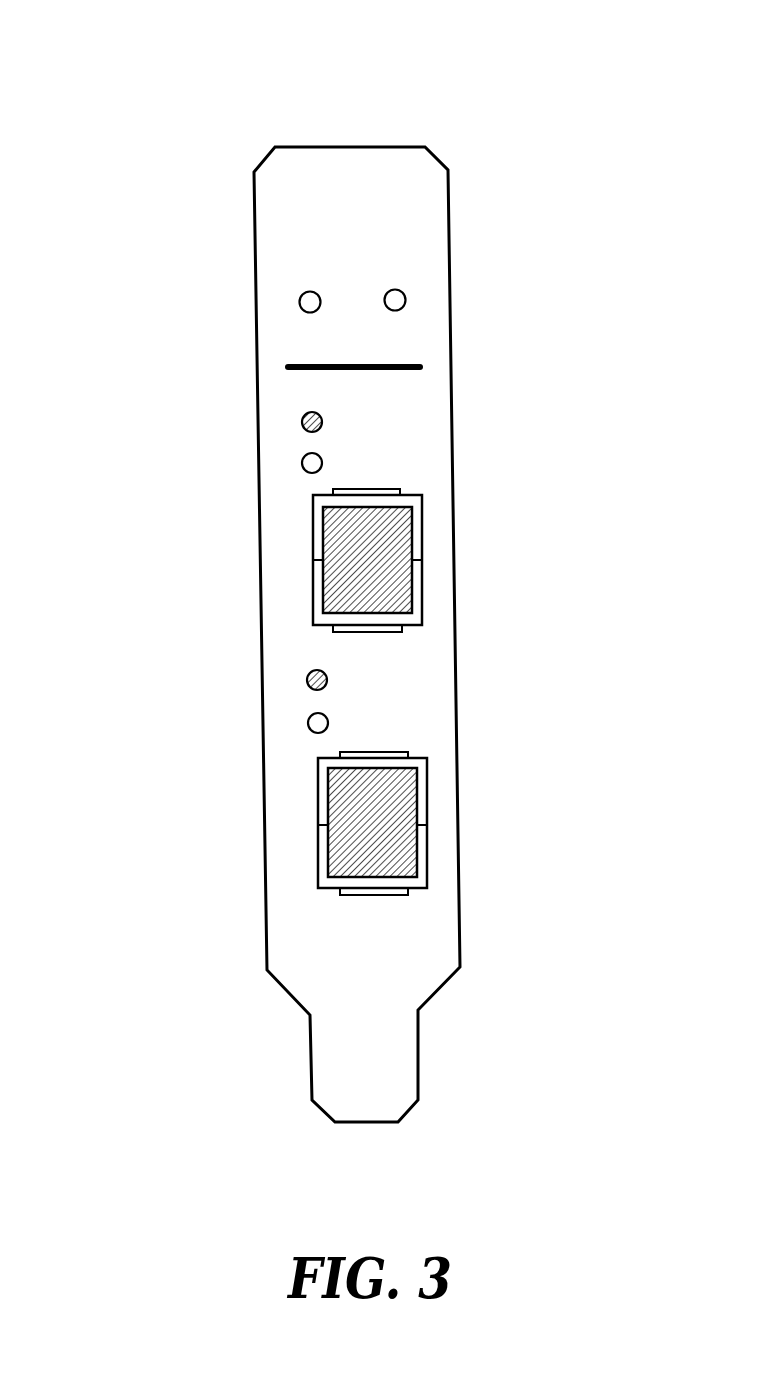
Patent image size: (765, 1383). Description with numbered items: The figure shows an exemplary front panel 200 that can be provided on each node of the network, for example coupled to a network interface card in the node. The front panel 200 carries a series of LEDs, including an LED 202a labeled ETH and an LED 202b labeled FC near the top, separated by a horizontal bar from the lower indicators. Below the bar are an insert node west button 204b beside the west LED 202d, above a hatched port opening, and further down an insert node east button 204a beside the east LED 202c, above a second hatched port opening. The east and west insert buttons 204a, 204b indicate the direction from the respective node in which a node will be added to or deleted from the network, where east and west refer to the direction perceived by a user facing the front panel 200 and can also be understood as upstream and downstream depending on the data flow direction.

The front panel 200 is at (518, 48).
The LED 202a is at (406, 298).
The LED 202b is at (299, 304).
The east LED 202c is at (308, 725).
The west LED 202d is at (302, 465).
The insert node east button 204a is at (307, 682).
The insert node west button 204b is at (302, 423).